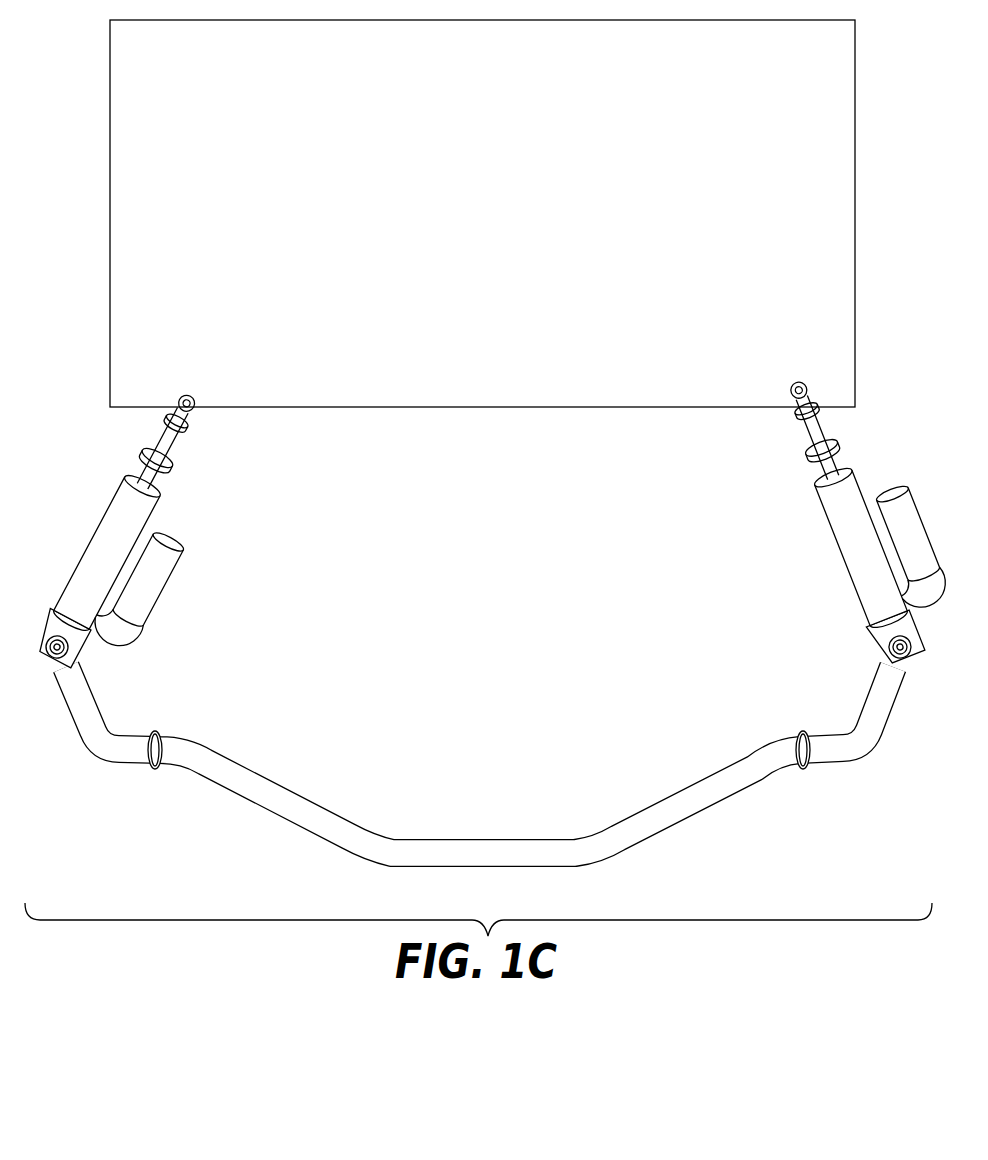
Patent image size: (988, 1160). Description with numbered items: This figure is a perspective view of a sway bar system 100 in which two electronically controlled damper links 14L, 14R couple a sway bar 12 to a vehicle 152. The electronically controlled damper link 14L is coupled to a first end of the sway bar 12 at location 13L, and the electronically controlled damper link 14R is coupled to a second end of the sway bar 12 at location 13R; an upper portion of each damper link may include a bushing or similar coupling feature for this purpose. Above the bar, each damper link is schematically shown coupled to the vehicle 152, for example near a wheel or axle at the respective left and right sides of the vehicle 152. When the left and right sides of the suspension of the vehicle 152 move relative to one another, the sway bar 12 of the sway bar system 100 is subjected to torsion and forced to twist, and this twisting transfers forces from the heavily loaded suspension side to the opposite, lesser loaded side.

The vehicle 152 is at (458, 219).
The sway bar system 100 is at (492, 622).
The sway bar 12 is at (263, 795).
The location 13L is at (162, 628).
The location 13R is at (860, 627).
The electronically controlled damper link 14L is at (148, 504).
The electronically controlled damper link 14R is at (839, 513).